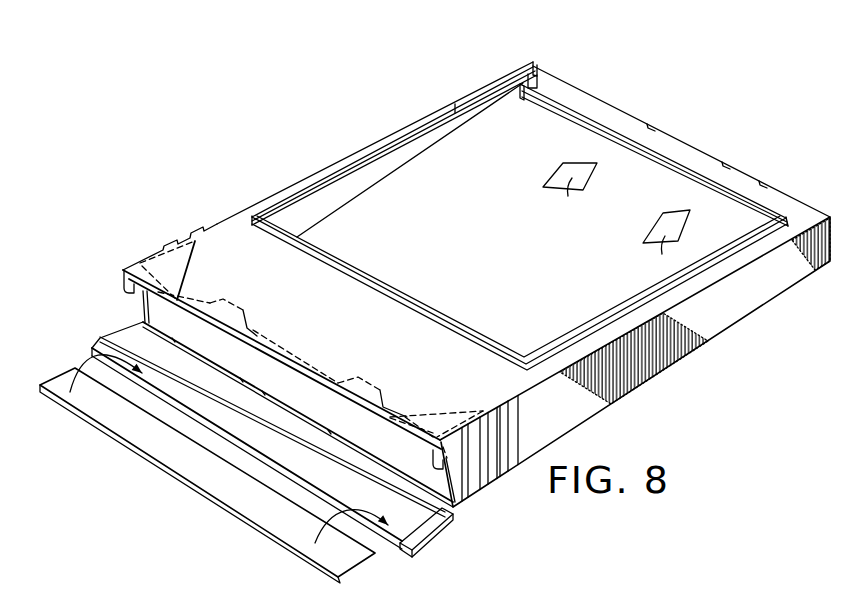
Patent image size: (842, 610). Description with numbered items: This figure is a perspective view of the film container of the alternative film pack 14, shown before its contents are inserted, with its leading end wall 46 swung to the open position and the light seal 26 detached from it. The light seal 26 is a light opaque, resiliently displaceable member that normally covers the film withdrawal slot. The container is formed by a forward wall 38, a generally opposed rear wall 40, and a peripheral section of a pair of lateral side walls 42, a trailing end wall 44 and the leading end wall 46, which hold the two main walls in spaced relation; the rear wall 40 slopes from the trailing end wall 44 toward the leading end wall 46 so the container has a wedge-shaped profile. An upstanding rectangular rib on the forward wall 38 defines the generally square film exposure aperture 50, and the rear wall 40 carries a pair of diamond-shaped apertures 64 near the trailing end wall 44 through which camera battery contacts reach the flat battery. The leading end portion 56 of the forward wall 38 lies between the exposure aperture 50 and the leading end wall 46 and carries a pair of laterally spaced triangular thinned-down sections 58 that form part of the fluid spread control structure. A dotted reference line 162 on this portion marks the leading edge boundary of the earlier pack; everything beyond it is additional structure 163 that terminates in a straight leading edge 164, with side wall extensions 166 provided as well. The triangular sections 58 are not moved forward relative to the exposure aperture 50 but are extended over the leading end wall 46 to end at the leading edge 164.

The film pack 14 is at (493, 72).
The light seal 26 is at (203, 470).
The forward wall 38 is at (403, 130).
The rear wall 40 is at (479, 273).
The lateral side walls 42 is at (750, 298).
The trailing end wall 44 is at (700, 148).
The leading end wall 46 is at (442, 530).
The film exposure aperture 50 is at (373, 183).
The leading end portion of forward wall 56 is at (237, 242).
The triangular thinned-down sections 58 is at (170, 252).
The diamond-shaped apertures 64 is at (616, 218).
The dotted reference line 162 is at (303, 367).
The additional structure 163 is at (227, 318).
The leading edge 164 is at (257, 343).
The side wall extensions 166 is at (131, 287).